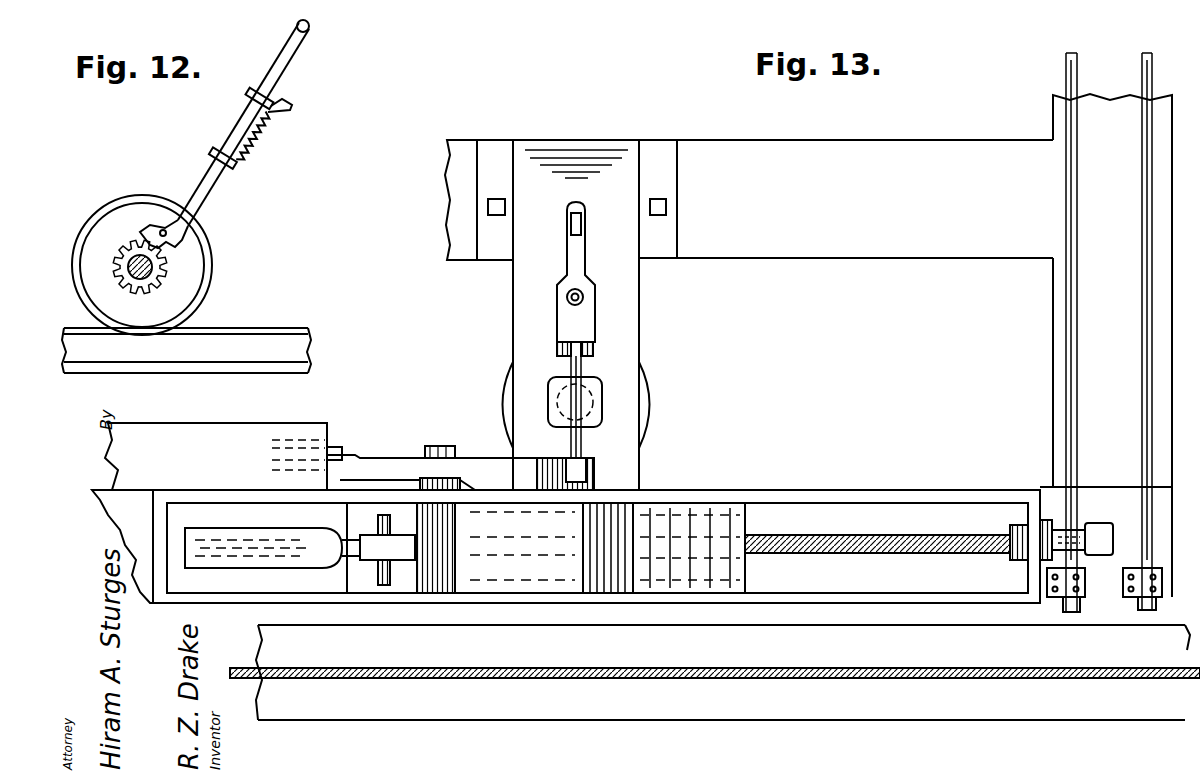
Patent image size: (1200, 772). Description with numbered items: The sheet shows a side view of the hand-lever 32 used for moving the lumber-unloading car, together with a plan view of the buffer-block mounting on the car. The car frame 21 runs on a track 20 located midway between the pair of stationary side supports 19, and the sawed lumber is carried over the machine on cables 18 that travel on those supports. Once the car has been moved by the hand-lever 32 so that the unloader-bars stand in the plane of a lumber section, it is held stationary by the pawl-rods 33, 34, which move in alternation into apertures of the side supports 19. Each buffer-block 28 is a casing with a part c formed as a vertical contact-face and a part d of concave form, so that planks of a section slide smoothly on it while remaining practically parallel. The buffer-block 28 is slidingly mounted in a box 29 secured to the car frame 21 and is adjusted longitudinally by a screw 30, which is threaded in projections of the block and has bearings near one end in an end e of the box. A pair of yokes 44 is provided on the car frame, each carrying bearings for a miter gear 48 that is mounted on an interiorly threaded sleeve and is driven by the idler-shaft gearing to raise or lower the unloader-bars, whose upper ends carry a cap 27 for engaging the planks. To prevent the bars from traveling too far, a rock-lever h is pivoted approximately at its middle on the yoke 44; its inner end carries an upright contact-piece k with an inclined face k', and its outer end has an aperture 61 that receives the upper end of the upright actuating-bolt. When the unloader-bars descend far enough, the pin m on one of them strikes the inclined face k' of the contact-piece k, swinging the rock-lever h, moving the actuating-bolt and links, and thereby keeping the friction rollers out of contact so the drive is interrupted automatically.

In FIG. 12, the hand-lever 32 is at (290, 60).
In FIG. 12, the track 20 is at (268, 330).
In FIG. 13, the yoke 44 is at (520, 305).
In FIG. 13, the car frame 21 is at (858, 255).
In FIG. 13, the pawl-rod 33 is at (1078, 185).
In FIG. 13, the pawl-rod 34 is at (1140, 265).
In FIG. 13, the aperture 61 is at (570, 228).
In FIG. 13, the rock-lever h is at (573, 272).
In FIG. 13, the contact-piece k is at (545, 343).
In FIG. 13, the inclined face k' is at (606, 344).
In FIG. 13, the pin m is at (571, 369).
In FIG. 13, the cap 27 is at (598, 412).
In FIG. 13, the miter gear 48 is at (652, 405).
In FIG. 13, the box 29 is at (858, 490).
In FIG. 13, the buffer-block 28 is at (535, 570).
In FIG. 13, the vertical contact-face c is at (578, 575).
In FIG. 13, the concave part d is at (660, 572).
In FIG. 13, the screw 30 is at (855, 535).
In FIG. 13, the end of the box e is at (1030, 514).
In FIG. 13, the cable 18 is at (390, 672).
In FIG. 13, the side support 19 is at (525, 708).